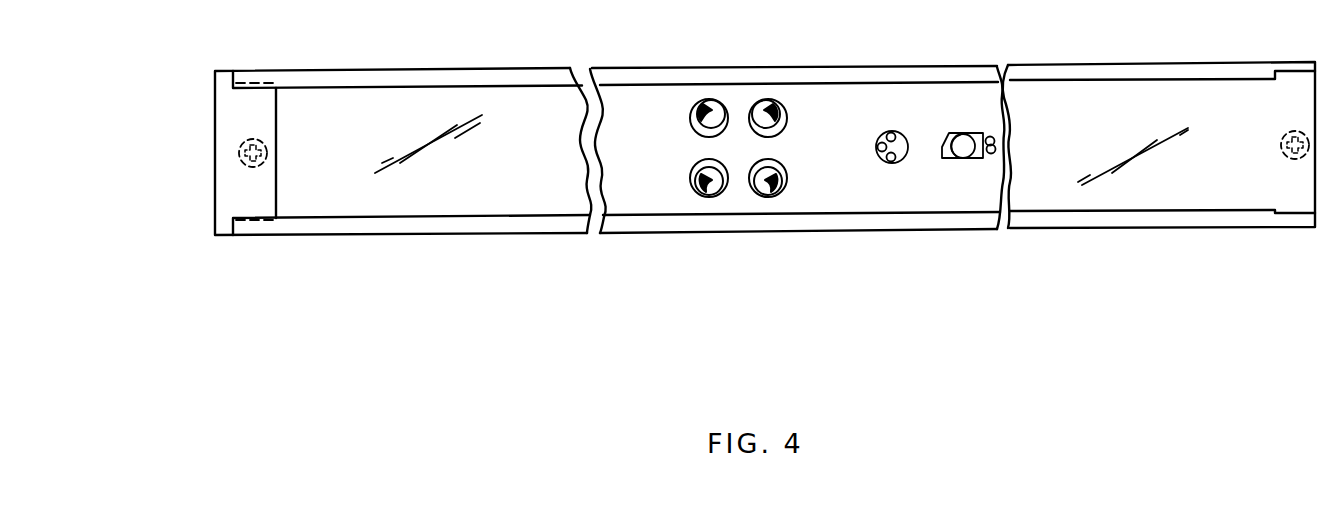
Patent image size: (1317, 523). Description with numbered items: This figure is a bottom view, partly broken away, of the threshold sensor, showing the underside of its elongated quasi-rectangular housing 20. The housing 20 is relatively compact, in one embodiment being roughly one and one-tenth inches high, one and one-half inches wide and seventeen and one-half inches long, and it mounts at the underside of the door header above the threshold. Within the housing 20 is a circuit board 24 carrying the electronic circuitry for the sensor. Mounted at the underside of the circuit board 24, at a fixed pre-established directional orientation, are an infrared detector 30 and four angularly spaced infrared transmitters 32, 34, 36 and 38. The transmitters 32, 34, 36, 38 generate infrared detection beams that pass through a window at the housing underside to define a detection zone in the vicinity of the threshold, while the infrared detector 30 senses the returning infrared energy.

The housing 20 is at (805, 80).
The circuit board 24 is at (967, 195).
The infrared detector 30 is at (945, 132).
The infrared transmitter 32 is at (690, 117).
The infrared transmitter 34 is at (789, 119).
The infrared transmitter 36 is at (690, 177).
The infrared transmitter 38 is at (789, 178).